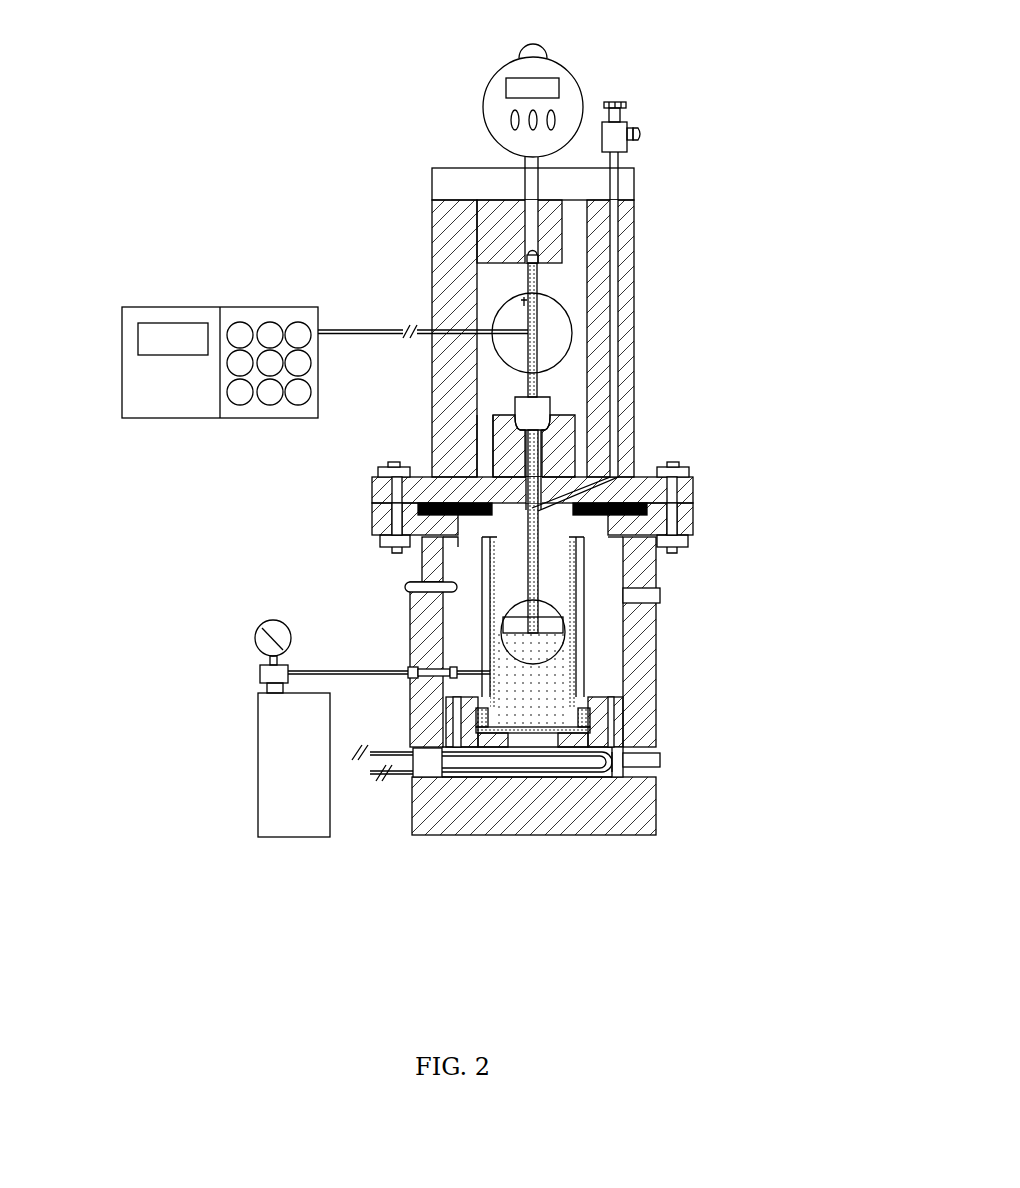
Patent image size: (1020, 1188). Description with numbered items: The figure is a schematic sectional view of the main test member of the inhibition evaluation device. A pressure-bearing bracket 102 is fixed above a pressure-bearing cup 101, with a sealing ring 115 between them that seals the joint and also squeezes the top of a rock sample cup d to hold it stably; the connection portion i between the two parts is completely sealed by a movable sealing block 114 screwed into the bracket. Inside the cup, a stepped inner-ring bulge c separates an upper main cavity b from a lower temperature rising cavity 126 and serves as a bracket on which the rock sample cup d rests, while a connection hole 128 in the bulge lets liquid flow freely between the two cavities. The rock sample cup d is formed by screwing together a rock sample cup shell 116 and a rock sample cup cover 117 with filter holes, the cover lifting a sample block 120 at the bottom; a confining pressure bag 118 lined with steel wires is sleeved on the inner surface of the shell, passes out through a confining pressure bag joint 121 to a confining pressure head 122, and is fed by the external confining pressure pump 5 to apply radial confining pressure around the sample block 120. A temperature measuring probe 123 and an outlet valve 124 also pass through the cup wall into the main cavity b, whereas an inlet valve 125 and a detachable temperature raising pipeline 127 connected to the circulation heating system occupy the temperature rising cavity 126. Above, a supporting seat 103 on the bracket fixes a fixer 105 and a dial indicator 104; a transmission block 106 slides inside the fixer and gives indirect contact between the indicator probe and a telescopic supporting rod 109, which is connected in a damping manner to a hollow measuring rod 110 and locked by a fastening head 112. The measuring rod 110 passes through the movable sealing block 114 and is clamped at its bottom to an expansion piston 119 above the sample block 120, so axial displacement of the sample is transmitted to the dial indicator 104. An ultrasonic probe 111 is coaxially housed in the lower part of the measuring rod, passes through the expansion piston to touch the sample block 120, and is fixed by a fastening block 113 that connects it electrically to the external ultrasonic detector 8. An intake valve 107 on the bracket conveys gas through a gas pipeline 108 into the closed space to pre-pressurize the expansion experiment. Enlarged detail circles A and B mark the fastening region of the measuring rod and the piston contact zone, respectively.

The ultrasonic detector 8 is at (190, 318).
The confining pressure pump 5 is at (272, 810).
The pressure-bearing cup 101 is at (690, 530).
The pressure-bearing bracket 102 is at (693, 480).
The supporting seat 103 is at (442, 190).
The dial indicator 104 is at (548, 67).
The fixer 105 is at (477, 213).
The transmission block 106 is at (540, 245).
The intake valve 107 is at (626, 122).
The gas pipeline 108 is at (613, 353).
The supporting rod 109 is at (533, 282).
The measuring rod 110 is at (530, 380).
The ultrasonic probe 111 is at (540, 500).
The fastening head 112 is at (515, 295).
The fastening block 113 is at (528, 330).
The movable sealing block 114 is at (550, 407).
The sealing ring 115 is at (418, 508).
The rock sample cup shell 116 is at (487, 592).
The rock sample cup cover 117 is at (590, 717).
The confining pressure bag 118 is at (640, 619).
The expansion piston 119 is at (567, 638).
The sample block 120 is at (586, 668).
The confining pressure bag joint 121 is at (405, 757).
The confining pressure head 122 is at (450, 673).
The temperature measuring probe 123 is at (413, 587).
The outlet valve 124 is at (655, 597).
The inlet valve 125 is at (617, 755).
The temperature rising cavity 126 is at (630, 772).
The temperature raising pipeline 127 is at (580, 768).
The connection hole 128 is at (443, 777).
The detail region A is at (572, 323).
The detail region B is at (500, 628).
The main cavity b is at (458, 547).
The inner-ring bulge c is at (490, 777).
The rock sample cup d is at (652, 573).
The connection portion i is at (493, 432).